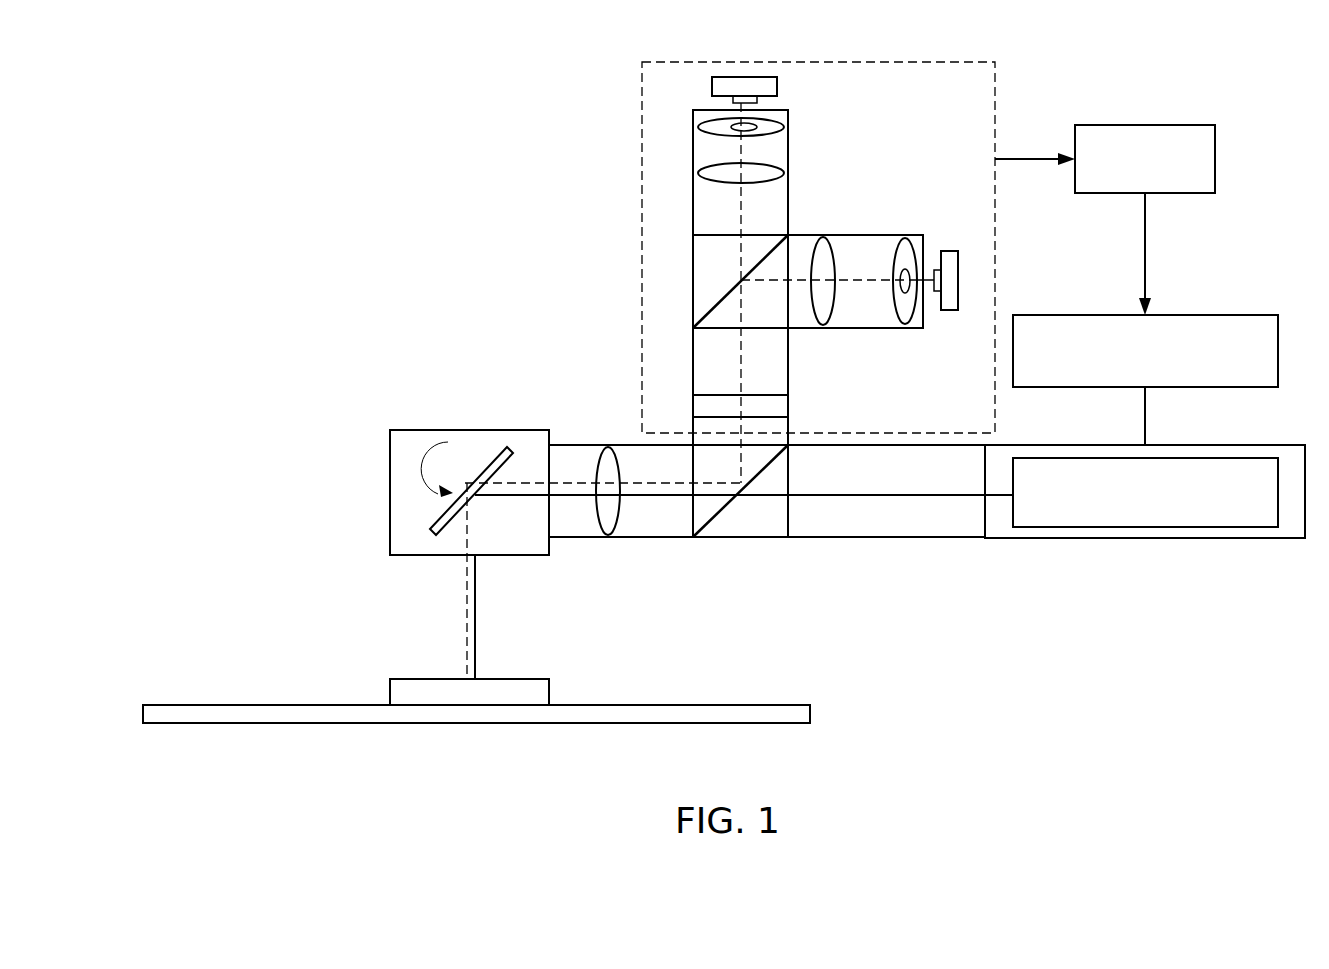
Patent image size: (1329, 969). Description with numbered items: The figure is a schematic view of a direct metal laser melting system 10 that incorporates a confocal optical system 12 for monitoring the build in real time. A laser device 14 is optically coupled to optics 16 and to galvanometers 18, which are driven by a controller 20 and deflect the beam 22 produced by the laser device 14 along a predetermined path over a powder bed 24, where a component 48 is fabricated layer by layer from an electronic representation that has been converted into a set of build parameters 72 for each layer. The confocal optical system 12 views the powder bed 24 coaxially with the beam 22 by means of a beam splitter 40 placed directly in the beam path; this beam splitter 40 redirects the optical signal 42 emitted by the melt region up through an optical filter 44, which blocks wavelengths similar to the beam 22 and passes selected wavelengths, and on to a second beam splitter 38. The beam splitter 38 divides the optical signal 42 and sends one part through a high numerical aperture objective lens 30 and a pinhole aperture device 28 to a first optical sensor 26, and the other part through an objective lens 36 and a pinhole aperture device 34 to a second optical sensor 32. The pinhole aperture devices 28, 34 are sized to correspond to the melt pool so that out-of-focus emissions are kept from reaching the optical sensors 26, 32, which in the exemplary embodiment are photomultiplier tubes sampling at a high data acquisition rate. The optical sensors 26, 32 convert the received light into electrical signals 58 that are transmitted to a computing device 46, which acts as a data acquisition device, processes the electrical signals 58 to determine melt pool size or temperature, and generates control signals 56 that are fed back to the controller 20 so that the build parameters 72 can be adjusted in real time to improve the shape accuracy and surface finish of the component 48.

The direct metal laser melting (DMLM) system 10 is at (300, 142).
The confocal optical system 12 is at (638, 120).
The laser device 14 is at (1173, 527).
The optics 16 is at (607, 538).
The galvanometers 18 is at (498, 455).
The controller 20 is at (1218, 315).
The beam 22 is at (903, 497).
The powder bed 24 is at (680, 705).
The optical sensor 26 is at (777, 83).
The pinhole aperture device 28 is at (785, 118).
The high numerical aperture objective lens 30 is at (788, 163).
The optical sensor 32 is at (942, 251).
The pinhole aperture device 34 is at (905, 246).
The objective lens 36 is at (822, 246).
The beam splitter 38 is at (693, 297).
The beam splitter 40 is at (755, 540).
The optical signal 42 is at (745, 366).
The optical filter 44 is at (788, 407).
The computing device 46 is at (1153, 125).
The component 48 is at (536, 679).
The control signals 56 is at (1145, 233).
The electrical signals 58 is at (1040, 155).
The build parameters 72 is at (1146, 418).